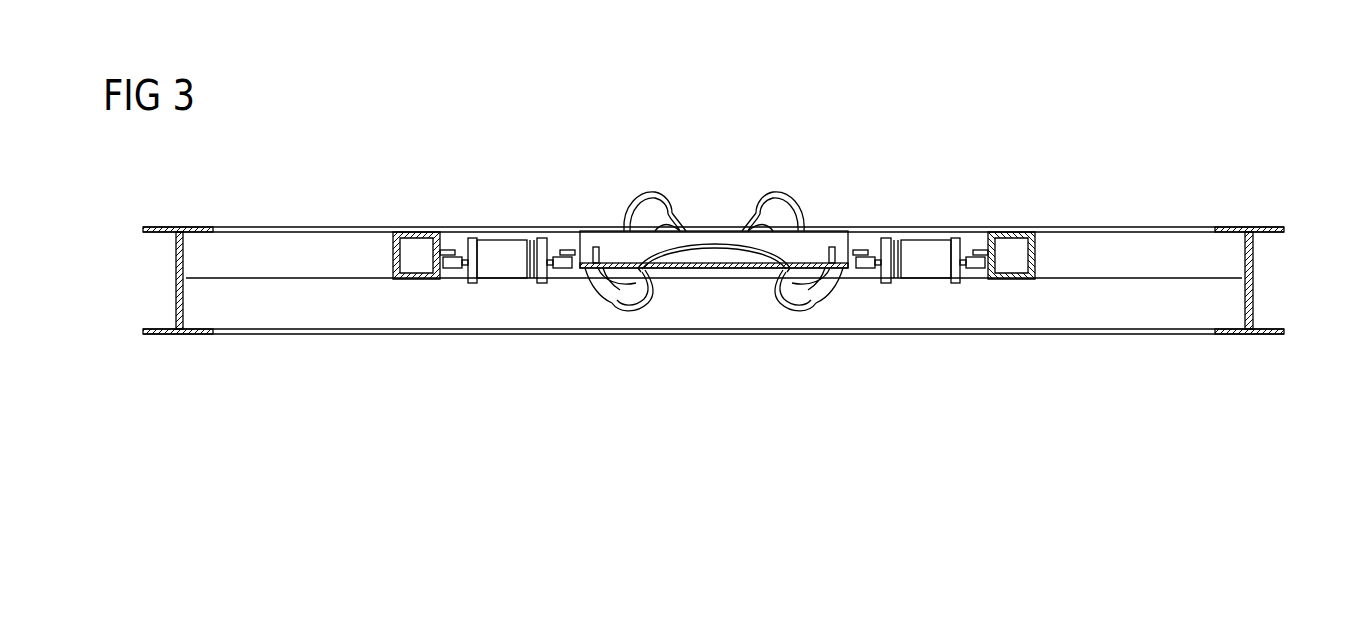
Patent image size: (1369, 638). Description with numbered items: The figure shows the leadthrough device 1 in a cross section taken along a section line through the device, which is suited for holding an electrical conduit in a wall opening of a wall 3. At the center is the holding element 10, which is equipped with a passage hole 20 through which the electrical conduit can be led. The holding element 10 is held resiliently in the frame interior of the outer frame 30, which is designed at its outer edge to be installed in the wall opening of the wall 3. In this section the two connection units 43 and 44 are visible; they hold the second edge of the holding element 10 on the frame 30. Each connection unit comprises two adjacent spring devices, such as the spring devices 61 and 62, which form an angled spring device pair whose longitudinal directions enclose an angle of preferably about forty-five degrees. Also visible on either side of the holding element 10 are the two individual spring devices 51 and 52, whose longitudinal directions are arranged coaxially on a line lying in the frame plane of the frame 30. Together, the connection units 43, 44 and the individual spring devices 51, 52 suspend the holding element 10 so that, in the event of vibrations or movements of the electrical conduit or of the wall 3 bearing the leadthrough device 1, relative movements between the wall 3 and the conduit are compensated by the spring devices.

The leadthrough device 1 is at (366, 190).
The wall 3 is at (168, 278).
The holding element 10 is at (721, 238).
The passage hole 20 is at (699, 250).
The outer frame 30 is at (1127, 252).
The connection unit 43 is at (802, 194).
The connection unit 44 is at (624, 195).
The individual spring device 51 is at (507, 250).
The individual spring device 52 is at (918, 250).
The spring device 61 is at (813, 290).
The spring device 62 is at (762, 215).